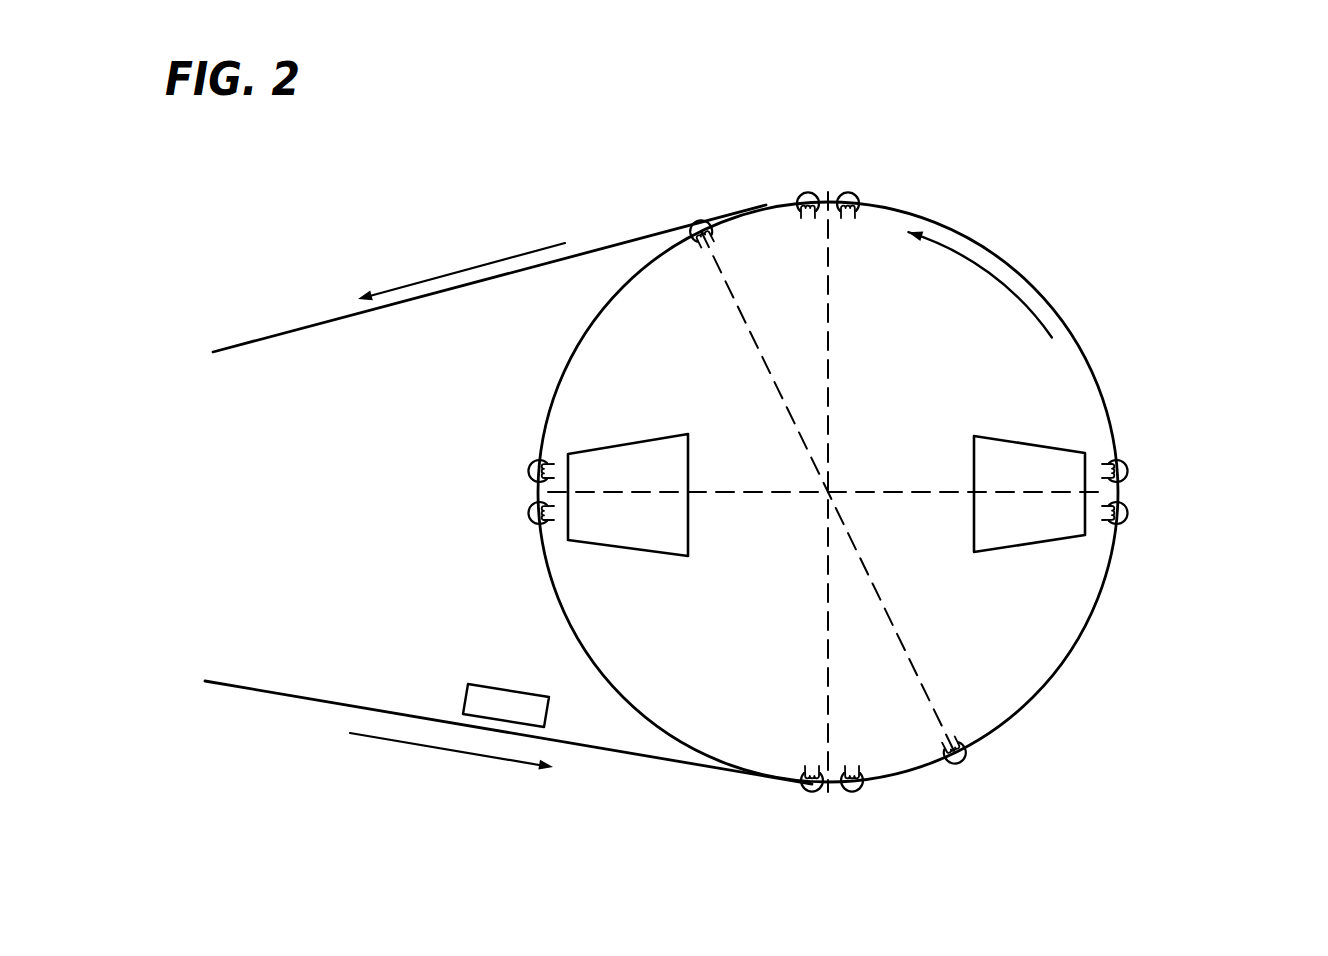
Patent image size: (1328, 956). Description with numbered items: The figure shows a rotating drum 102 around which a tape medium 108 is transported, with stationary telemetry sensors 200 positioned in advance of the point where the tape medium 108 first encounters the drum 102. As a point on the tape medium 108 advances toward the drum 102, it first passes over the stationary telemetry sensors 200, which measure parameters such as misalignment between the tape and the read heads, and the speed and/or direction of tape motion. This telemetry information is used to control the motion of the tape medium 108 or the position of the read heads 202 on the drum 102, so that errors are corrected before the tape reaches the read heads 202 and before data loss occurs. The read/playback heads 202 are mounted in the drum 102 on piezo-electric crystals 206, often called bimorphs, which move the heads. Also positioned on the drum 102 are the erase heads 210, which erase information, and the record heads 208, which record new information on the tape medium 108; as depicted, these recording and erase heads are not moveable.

The drum 102 is at (1045, 292).
The tape medium 108 is at (277, 335).
The stationary telemetry sensors 200 is at (488, 684).
The AT heads 202 is at (496, 466).
The piezo-electric crystals 206 is at (648, 437).
The REC heads 208 is at (892, 170).
The RE heads 210 is at (652, 205).